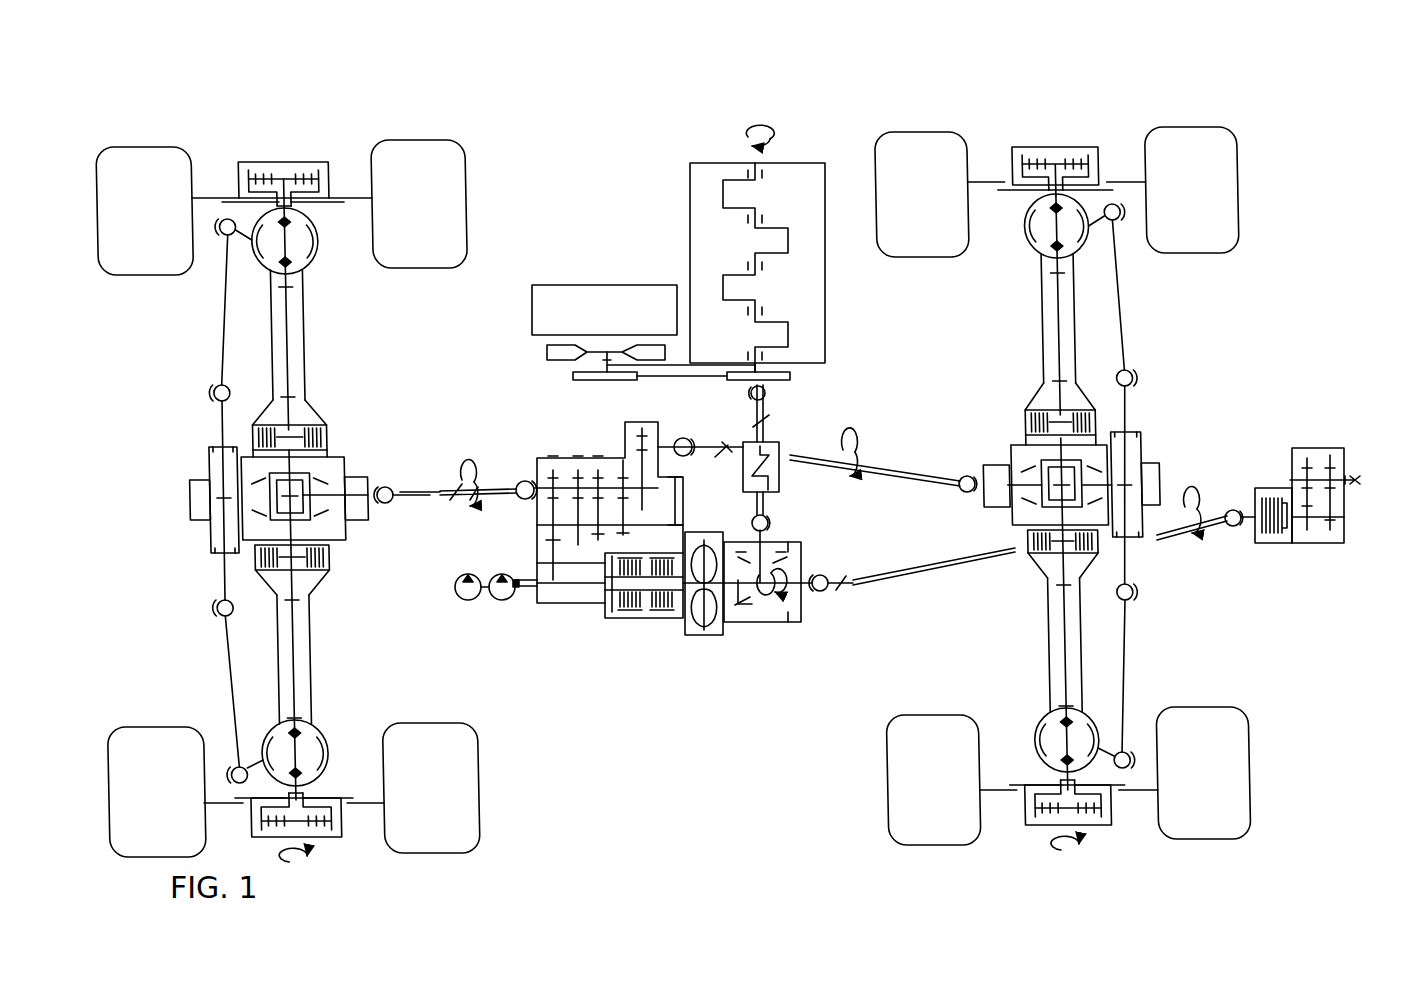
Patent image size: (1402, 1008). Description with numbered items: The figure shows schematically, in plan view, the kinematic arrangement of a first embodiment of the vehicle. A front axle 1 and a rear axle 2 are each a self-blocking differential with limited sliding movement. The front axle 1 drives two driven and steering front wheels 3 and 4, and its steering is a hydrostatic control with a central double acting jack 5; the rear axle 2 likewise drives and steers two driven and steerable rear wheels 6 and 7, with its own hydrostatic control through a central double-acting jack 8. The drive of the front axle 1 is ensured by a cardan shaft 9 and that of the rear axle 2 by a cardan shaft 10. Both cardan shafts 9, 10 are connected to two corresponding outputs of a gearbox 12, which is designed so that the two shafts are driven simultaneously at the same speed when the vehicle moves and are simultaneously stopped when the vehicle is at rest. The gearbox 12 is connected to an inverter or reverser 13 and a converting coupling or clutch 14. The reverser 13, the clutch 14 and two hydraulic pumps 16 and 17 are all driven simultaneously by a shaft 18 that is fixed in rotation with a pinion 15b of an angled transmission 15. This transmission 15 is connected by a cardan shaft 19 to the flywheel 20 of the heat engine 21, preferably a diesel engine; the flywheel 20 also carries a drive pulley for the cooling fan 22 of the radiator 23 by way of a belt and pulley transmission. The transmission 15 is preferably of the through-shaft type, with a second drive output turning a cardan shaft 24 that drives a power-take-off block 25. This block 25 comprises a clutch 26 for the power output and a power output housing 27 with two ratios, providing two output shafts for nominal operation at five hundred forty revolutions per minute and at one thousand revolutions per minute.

The front axle 1 is at (312, 481).
The rear axle 2 is at (1230, 267).
The front wheel 3 is at (411, 137).
The front wheel 4 is at (487, 786).
The central double acting jack 5 is at (207, 457).
The rear wheel 6 is at (945, 850).
The rear wheel 7 is at (867, 152).
The central double-acting jack 8 is at (1150, 447).
The cardan shaft 9 is at (453, 477).
The cardan shaft 10 is at (913, 460).
The gearbox 12 is at (568, 443).
The inverter 13 is at (645, 627).
The converting coupling or clutch 14 is at (707, 643).
The angled transmission 15 is at (768, 628).
The pinion 15b is at (745, 605).
The hydraulic pump 16 is at (473, 612).
The hydraulic pump 17 is at (507, 610).
The shaft 18 is at (577, 590).
The cardan shaft 19 is at (788, 493).
The flywheel 20 is at (795, 375).
The heat engine 21 is at (832, 262).
The cooling fan 22 is at (568, 347).
The radiator 23 is at (637, 280).
The cardan shaft 24 is at (903, 587).
The power-take-off block 25 is at (1302, 550).
The clutch 26 is at (1273, 545).
The power output housing 27 is at (1327, 545).